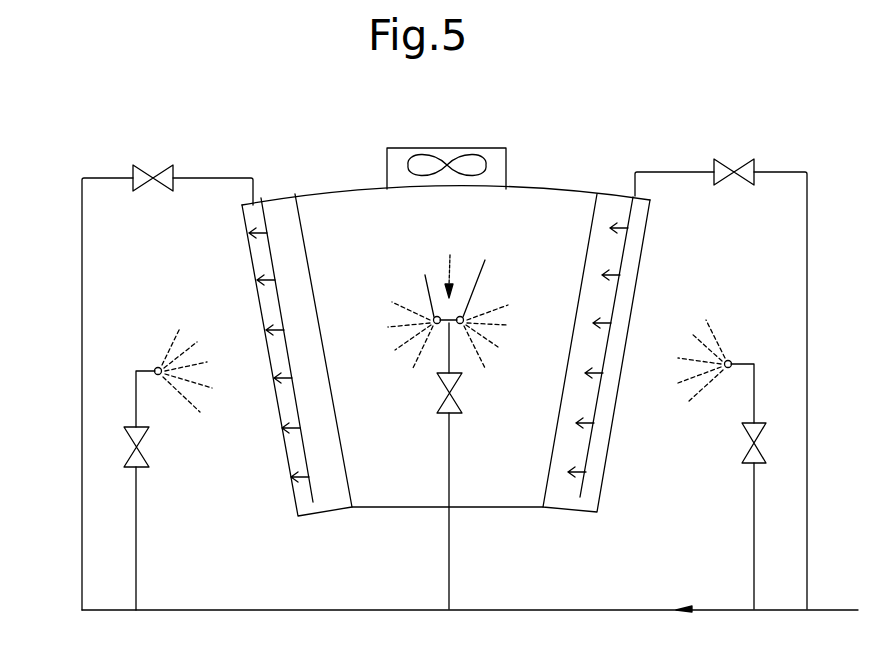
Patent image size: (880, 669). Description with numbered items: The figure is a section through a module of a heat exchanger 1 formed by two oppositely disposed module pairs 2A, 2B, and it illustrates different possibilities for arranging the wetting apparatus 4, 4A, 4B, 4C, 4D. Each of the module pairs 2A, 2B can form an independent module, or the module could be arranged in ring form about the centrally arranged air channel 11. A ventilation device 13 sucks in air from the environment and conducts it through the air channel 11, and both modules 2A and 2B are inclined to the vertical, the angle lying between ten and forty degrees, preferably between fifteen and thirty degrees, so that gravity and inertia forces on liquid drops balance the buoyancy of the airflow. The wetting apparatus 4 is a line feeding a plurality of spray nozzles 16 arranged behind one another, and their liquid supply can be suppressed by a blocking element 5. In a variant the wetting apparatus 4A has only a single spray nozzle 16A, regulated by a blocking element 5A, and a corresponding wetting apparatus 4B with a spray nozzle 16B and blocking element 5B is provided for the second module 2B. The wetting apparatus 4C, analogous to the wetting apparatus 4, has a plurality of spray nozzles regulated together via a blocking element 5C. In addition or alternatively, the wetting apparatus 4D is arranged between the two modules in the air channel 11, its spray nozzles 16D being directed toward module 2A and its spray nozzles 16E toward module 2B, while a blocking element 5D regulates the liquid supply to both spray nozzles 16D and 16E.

The heat exchanger 1 is at (593, 141).
The module pair 2A is at (607, 200).
The module pair 2B is at (278, 207).
The wetting apparatus 4 is at (644, 347).
The wetting apparatus 4A is at (755, 395).
The wetting apparatus 4B is at (130, 398).
The wetting apparatus 4C is at (272, 264).
The wetting apparatus 4D is at (451, 457).
The blocking element 5 is at (742, 160).
The blocking element 5A is at (742, 456).
The blocking element 5B is at (150, 458).
The blocking element 5C is at (162, 165).
The blocking element 5D is at (463, 405).
The air channel 11 is at (453, 255).
The ventilation device 13 is at (496, 155).
The spray nozzle 16 is at (615, 273).
The spray nozzle 16A is at (732, 357).
The spray nozzle 16B is at (157, 365).
The spray nozzle 16D is at (467, 315).
The spray nozzle 16E is at (432, 312).